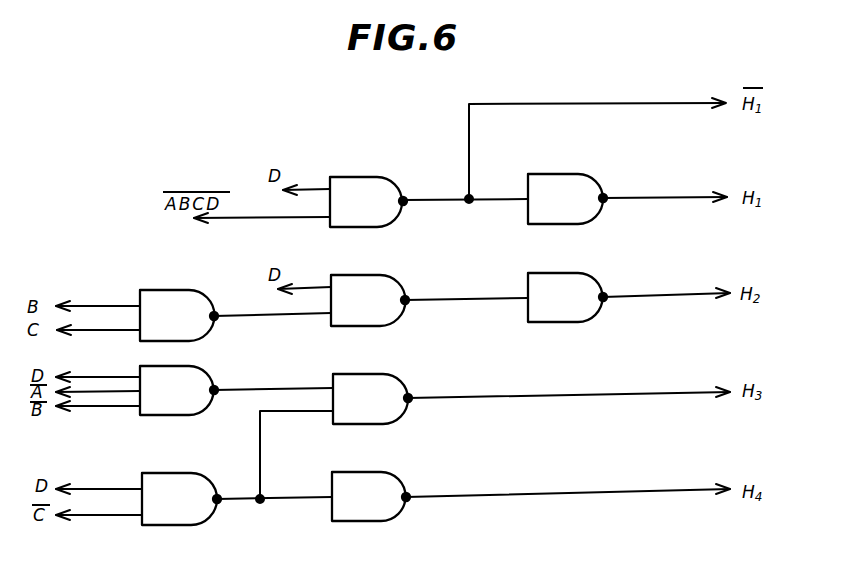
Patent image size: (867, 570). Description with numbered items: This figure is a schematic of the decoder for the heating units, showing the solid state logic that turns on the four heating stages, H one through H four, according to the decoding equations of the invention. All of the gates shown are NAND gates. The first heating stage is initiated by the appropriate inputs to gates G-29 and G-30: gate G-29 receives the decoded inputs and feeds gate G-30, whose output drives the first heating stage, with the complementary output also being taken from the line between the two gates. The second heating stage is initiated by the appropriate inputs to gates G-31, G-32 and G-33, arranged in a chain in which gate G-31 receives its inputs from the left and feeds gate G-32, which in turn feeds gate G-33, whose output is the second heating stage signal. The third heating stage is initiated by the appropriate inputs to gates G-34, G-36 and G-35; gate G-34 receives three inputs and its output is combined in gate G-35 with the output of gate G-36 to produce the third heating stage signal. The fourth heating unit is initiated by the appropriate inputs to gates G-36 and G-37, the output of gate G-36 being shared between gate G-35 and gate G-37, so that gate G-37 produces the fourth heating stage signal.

The gate G- 29 is at (368, 202).
The gate G- 30 is at (567, 199).
The gate G- 31 is at (179, 315).
The gate G- 32 is at (370, 300).
The gate G- 33 is at (567, 297).
The gate G- 34 is at (179, 390).
The gate G- 35 is at (372, 399).
The gate G- 36 is at (181, 499).
The gate G- 37 is at (371, 496).